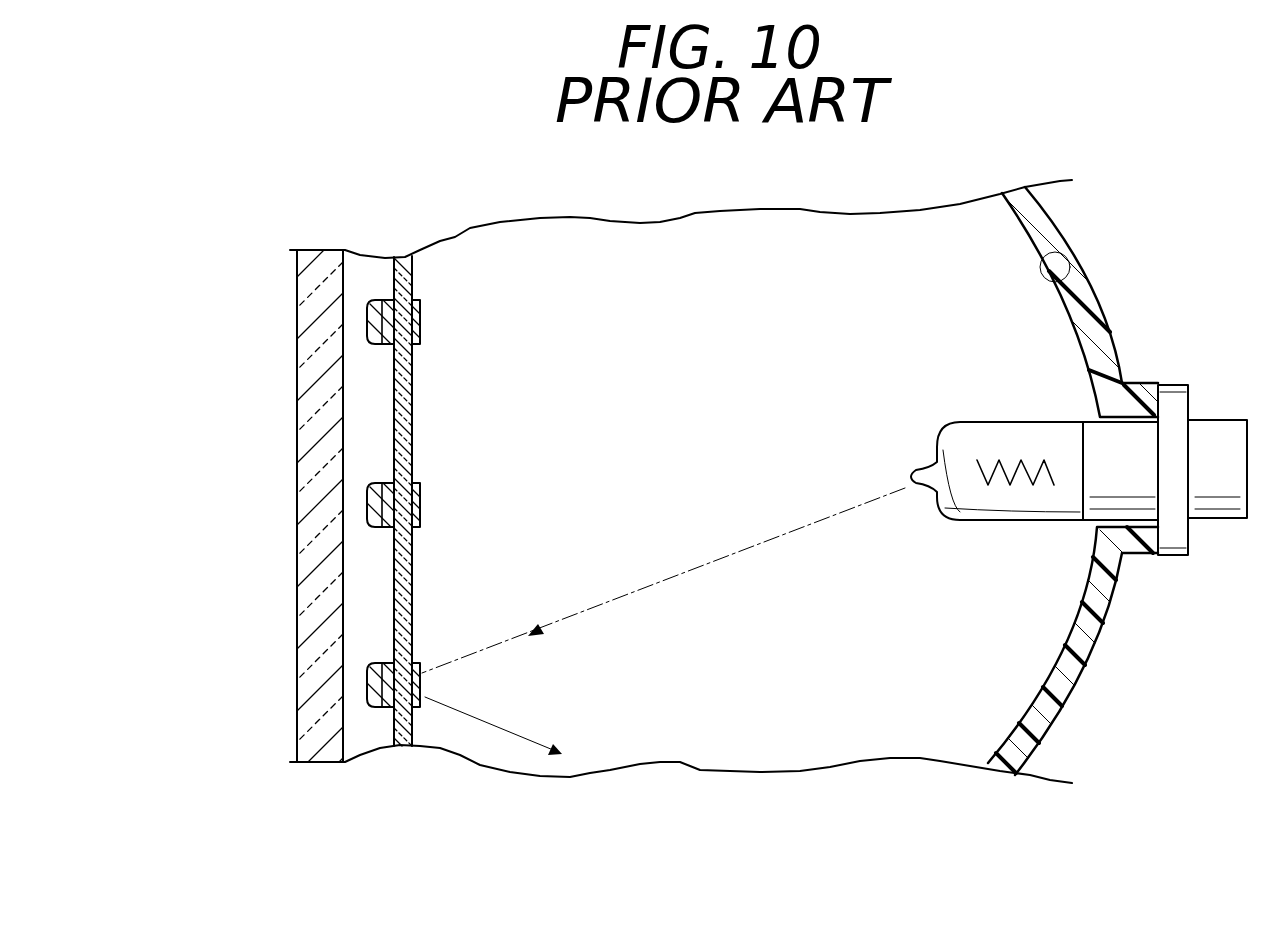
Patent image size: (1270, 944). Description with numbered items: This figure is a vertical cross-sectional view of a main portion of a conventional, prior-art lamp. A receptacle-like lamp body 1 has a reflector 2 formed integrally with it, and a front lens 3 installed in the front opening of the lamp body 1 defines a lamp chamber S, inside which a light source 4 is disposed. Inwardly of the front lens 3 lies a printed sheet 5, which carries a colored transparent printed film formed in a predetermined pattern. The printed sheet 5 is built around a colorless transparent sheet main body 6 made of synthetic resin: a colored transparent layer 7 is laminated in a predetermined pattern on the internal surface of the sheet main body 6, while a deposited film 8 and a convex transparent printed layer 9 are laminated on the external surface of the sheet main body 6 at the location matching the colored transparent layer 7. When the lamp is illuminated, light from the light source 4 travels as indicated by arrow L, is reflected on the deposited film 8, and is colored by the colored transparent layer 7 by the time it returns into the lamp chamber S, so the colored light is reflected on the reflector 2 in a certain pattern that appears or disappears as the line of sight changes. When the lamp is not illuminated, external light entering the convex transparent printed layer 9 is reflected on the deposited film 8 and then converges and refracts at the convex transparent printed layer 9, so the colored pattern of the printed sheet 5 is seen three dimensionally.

The lamp body 1 is at (1116, 311).
The reflector 2 is at (1066, 257).
The front lens 3 is at (297, 450).
The light source 4 is at (1010, 415).
The printed sheet 5 is at (392, 603).
The sheet main body 6 is at (412, 278).
The colored transparent layer 7 is at (420, 310).
The deposited film 8 is at (387, 346).
The convex transparent printed layer 9 is at (367, 303).
The lamp chamber S is at (731, 463).
The arrow L is at (663, 621).